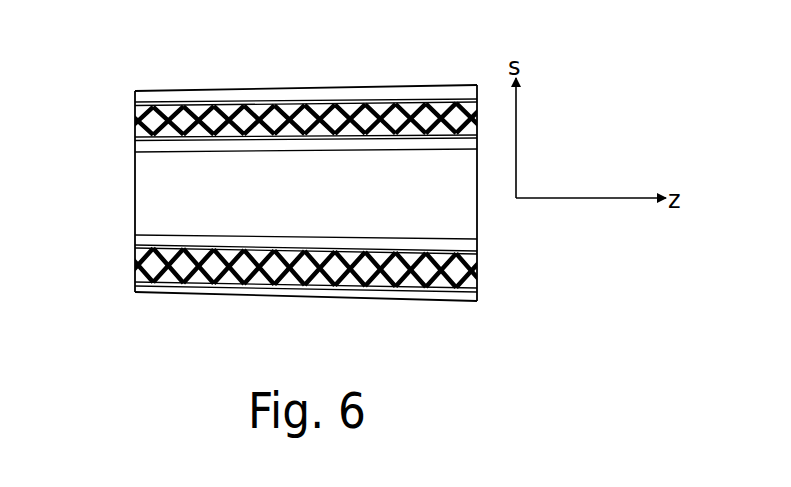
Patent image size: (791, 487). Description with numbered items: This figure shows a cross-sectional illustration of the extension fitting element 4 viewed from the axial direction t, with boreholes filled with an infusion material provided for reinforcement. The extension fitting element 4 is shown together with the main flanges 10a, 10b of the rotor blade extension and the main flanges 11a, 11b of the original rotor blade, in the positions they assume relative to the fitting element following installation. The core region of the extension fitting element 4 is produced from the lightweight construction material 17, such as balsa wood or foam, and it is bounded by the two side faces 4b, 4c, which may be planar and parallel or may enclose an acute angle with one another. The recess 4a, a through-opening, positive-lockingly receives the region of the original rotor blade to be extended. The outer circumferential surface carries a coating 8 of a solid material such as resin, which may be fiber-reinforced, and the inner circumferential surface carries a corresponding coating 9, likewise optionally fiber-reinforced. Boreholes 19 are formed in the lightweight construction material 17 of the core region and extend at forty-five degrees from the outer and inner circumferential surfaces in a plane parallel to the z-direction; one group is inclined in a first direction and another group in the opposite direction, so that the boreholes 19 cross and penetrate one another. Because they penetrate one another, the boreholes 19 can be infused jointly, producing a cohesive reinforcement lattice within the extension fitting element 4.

The extension fitting element 4 is at (418, 301).
The recess 4a is at (458, 203).
The side face 4b is at (478, 257).
The side face 4c is at (140, 262).
The coating 8 is at (135, 103).
The coating 9 is at (135, 139).
The main flange 10a is at (135, 92).
The main flange 10b is at (135, 293).
The main flange 11a is at (193, 144).
The main flange 11b is at (268, 237).
The lightweight construction material 17 is at (470, 116).
The boreholes 19 is at (140, 117).